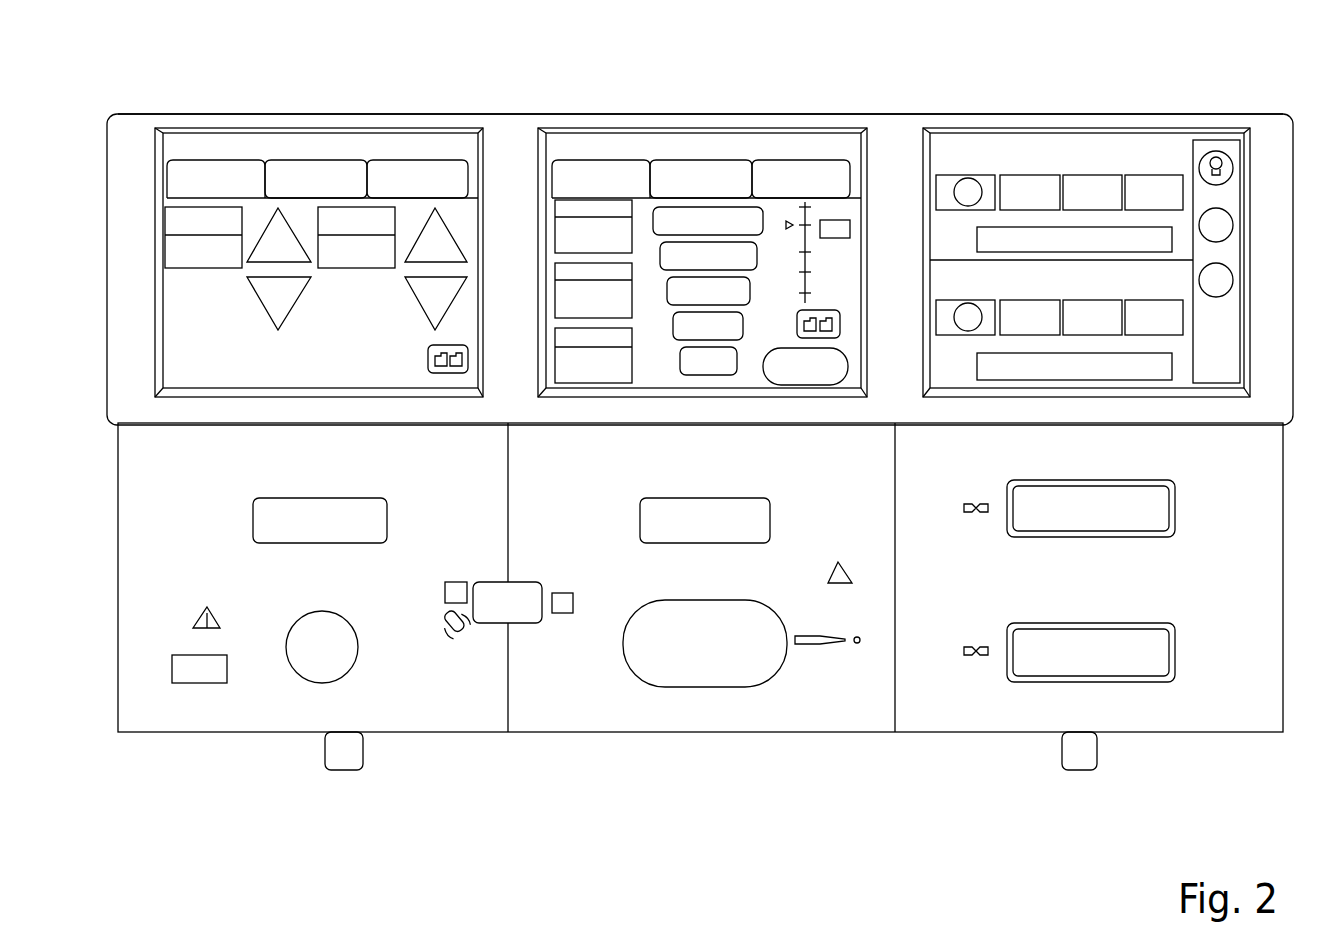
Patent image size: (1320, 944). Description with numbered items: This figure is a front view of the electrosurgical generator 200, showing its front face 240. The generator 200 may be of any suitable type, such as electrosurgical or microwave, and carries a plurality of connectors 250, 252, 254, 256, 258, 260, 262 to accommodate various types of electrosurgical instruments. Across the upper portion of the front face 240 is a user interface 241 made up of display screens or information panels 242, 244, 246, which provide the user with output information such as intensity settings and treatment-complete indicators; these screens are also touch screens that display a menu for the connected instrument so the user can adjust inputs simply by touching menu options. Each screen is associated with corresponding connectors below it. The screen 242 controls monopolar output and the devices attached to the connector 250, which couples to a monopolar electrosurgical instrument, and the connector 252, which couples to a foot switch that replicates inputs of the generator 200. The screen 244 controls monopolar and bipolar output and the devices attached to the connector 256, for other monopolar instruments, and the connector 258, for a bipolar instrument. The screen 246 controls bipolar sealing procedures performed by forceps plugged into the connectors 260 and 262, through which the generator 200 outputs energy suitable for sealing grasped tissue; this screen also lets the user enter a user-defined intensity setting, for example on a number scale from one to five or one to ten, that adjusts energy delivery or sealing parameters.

The generator 200 is at (1140, 54).
The front face 240 is at (543, 114).
The user interface 241 is at (728, 96).
The display screen 242 is at (390, 127).
The display screen 244 is at (705, 127).
The display screen 246 is at (1023, 127).
The connector 250 is at (250, 522).
The connector 252 is at (290, 625).
The connector 254 is at (498, 582).
The connector 256 is at (672, 497).
The connector 258 is at (640, 600).
The connector 260 is at (1033, 478).
The connector 262 is at (1033, 622).